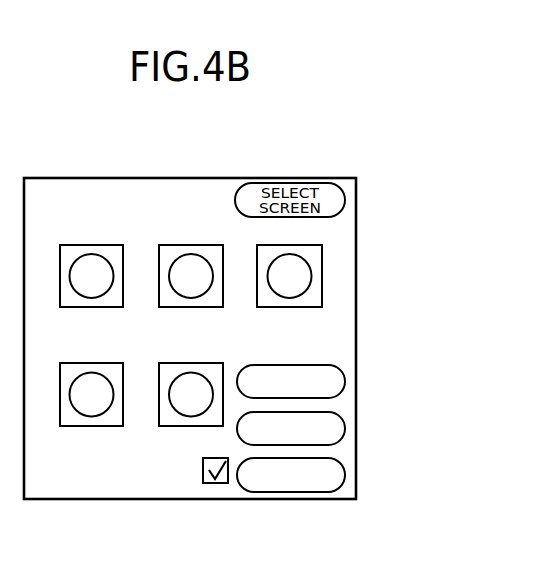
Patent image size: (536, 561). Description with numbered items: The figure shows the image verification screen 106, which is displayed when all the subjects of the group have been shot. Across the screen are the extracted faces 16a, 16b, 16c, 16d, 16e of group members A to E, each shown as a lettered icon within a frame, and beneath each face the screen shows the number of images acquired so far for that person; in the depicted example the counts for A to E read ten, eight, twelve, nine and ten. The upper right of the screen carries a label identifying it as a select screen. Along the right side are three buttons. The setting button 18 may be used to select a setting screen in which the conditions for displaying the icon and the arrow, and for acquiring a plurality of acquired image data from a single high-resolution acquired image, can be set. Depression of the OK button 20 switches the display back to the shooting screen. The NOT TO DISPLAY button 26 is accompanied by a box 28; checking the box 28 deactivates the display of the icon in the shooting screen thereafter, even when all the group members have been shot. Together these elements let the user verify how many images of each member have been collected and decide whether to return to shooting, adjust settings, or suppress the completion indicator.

The image verification screen 106 is at (276, 161).
The extracted face of A 16a is at (92, 245).
The extracted face of B 16b is at (188, 245).
The extracted face of C 16c is at (322, 272).
The extracted face of D 16d is at (60, 408).
The extracted face of E 16e is at (159, 408).
The setting button 18 is at (345, 380).
The OK button 20 is at (345, 428).
The NOT TO DISPLAY button 26 is at (345, 473).
The box 28 is at (222, 483).